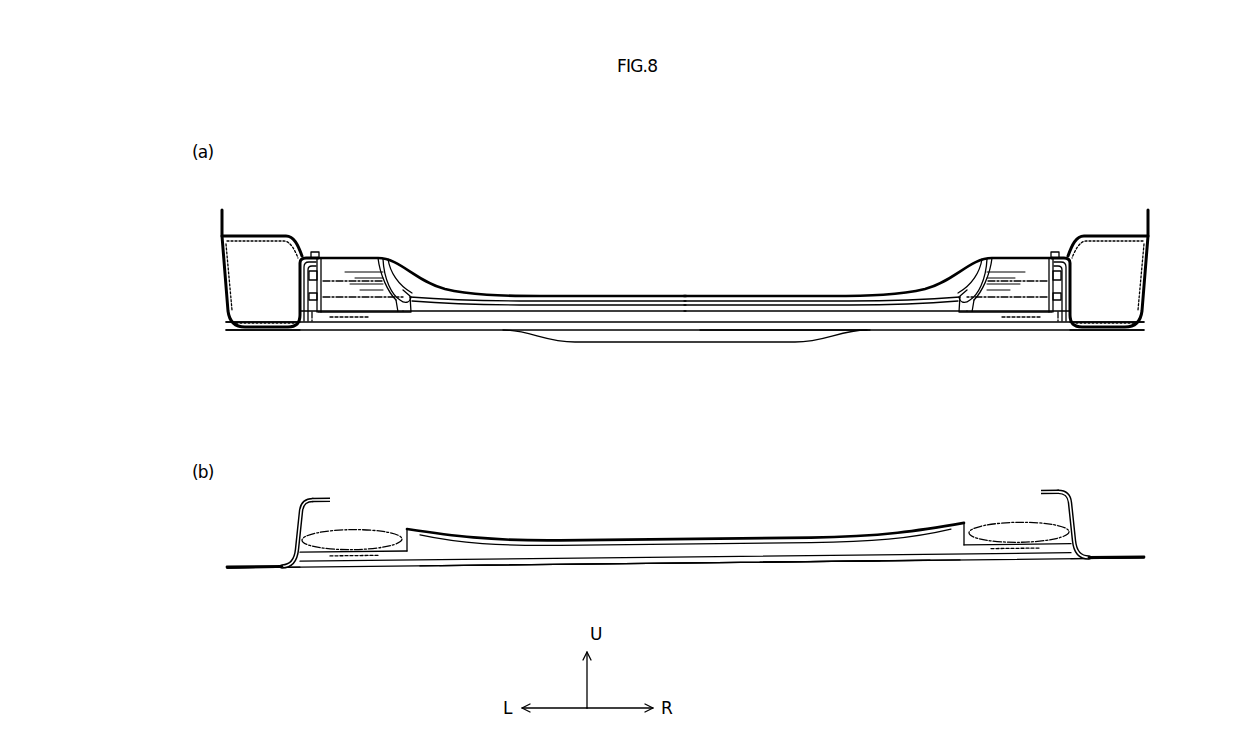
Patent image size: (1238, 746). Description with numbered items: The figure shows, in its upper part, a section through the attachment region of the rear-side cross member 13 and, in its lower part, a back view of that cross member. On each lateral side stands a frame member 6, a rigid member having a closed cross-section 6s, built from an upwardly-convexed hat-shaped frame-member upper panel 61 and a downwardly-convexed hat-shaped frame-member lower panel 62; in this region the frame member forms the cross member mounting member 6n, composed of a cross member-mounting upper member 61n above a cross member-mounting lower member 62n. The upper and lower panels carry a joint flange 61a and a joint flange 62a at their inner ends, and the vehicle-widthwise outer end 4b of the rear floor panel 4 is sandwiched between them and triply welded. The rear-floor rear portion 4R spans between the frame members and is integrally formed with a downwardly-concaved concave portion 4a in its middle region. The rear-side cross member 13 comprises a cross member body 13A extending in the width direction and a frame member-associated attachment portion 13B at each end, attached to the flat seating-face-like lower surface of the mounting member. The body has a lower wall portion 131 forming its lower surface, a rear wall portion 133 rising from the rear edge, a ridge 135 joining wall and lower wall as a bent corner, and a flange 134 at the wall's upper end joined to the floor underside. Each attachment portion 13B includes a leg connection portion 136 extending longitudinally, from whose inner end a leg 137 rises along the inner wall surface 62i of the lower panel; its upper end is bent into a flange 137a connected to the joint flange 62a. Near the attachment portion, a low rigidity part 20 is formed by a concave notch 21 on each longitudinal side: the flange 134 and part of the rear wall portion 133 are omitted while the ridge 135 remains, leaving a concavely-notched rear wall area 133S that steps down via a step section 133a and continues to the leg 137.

The rear floor panel 4 is at (685, 263).
The rear-floor rear portion 4R is at (945, 273).
The concave portion 4a is at (972, 288).
The vehicle-widthwise outer end 4b is at (314, 266).
The frame member 6 is at (684, 245).
The cross member mounting member 6n is at (243, 229).
The closed cross-section 6s is at (273, 296).
The frame-member upper panel 61 is at (685, 220).
The cross member-mounting upper member 61n is at (254, 233).
The joint flange 61a is at (314, 252).
The frame-member lower panel 62 is at (686, 268).
The cross member-mounting lower member 62n is at (224, 284).
The joint flange 62a is at (301, 271).
The vehicle-widthwise inner wall surface 62i is at (299, 329).
The rear-side cross member 13 is at (951, 349).
The cross member body 13A is at (815, 333).
The frame member-associated attachment portion 13B is at (257, 338).
The low rigidity part 20 is at (350, 332).
The concave notch 21 is at (315, 312).
The lower wall portion 131 is at (918, 331).
The rear wall portion 133 is at (713, 312).
The step section 133a is at (397, 313).
The concavely-notched rear wall area 133S is at (332, 318).
The flange 134 is at (791, 302).
The ridge 135 is at (478, 331).
The leg connection portion 136 is at (277, 566).
The leg 137 is at (323, 276).
The flange 137a is at (316, 500).